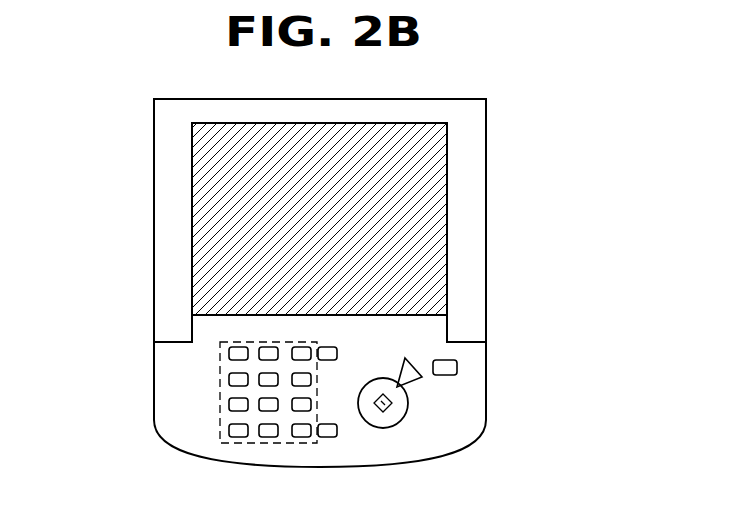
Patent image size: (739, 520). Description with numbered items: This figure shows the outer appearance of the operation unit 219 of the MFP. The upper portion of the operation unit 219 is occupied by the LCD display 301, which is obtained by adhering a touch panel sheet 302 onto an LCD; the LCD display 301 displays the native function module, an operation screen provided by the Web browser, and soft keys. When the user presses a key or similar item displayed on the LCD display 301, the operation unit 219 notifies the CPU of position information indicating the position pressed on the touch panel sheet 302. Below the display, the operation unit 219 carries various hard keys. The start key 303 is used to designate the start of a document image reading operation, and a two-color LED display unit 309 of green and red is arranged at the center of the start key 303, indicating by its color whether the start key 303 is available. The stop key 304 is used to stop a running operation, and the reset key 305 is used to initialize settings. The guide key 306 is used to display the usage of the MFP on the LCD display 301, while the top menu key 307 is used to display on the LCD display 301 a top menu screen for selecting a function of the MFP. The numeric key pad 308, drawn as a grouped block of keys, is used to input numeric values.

The operation unit 219 is at (420, 99).
The LCD display 301 is at (447, 148).
The touch panel sheet 302 is at (427, 215).
The start key 303 is at (408, 403).
The stop key 304 is at (410, 362).
The reset key 305 is at (457, 367).
The guide key 306 is at (330, 437).
The top menu key 307 is at (332, 347).
The numeric key pad 308 is at (220, 410).
The two-color LED display unit 309 is at (392, 406).